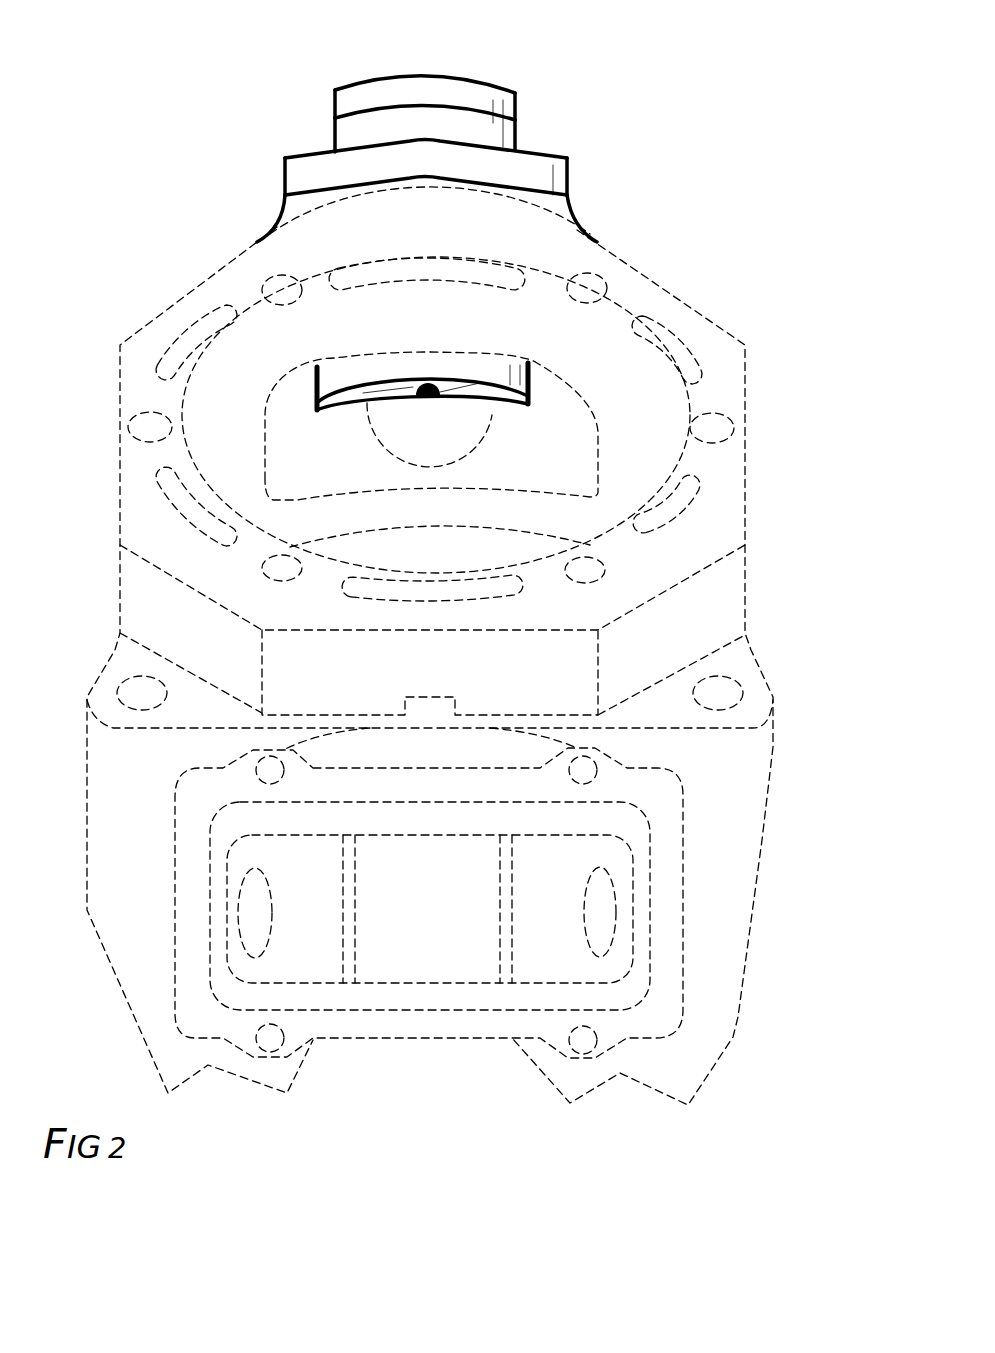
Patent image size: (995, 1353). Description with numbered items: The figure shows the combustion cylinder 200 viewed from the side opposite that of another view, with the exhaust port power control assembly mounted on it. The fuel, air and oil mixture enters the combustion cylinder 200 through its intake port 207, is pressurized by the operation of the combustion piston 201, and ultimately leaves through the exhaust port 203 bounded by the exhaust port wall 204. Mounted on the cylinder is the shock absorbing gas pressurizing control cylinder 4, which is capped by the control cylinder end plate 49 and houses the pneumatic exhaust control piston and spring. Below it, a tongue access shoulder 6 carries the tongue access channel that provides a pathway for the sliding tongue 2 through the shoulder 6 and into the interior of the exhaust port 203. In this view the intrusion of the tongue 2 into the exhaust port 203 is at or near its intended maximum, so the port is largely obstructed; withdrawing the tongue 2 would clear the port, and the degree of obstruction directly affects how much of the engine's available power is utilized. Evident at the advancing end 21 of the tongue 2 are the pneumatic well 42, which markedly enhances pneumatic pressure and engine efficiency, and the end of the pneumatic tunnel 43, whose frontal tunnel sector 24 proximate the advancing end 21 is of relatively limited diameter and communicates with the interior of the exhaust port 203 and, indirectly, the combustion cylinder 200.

The sliding tongue 2 is at (510, 368).
The control cylinder end plate 49 is at (480, 92).
The shock absorbing gas pressurizing control cylinder 4 is at (473, 135).
The tongue access shoulder 6 is at (568, 242).
The combustion cylinder 200 is at (440, 382).
The pneumatic well 42 is at (443, 383).
The pneumatic tunnel 43 is at (452, 381).
The frontal tunnel sector 24 is at (470, 384).
The advancing end 21 is at (507, 387).
The exhaust port 203 is at (577, 388).
The exhaust port wall 204 is at (557, 428).
The combustion piston 201 is at (485, 553).
The intake port 207 is at (585, 848).